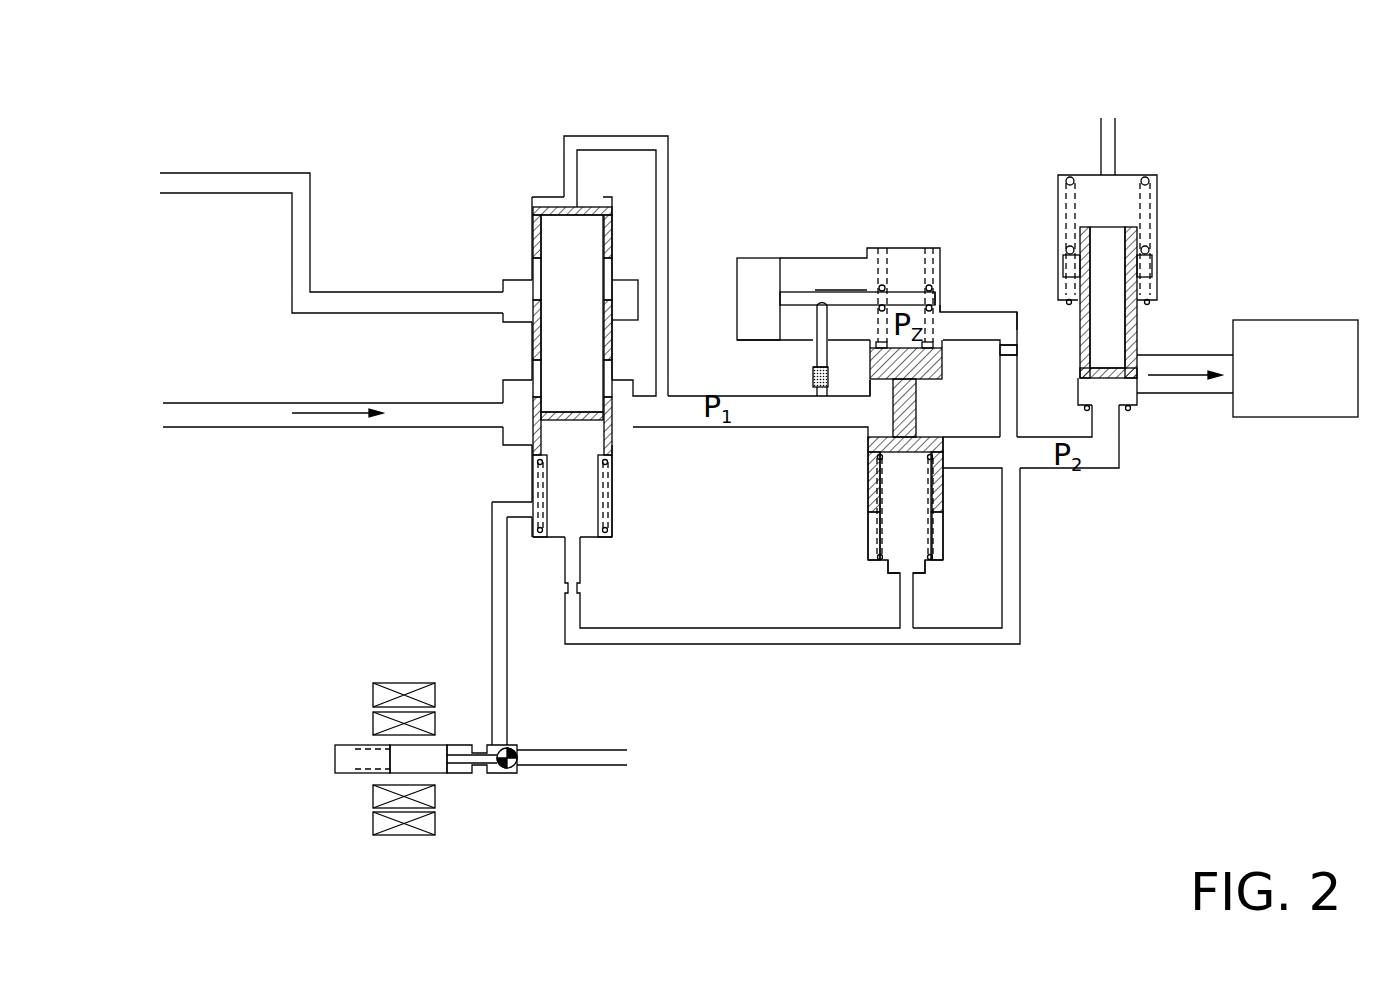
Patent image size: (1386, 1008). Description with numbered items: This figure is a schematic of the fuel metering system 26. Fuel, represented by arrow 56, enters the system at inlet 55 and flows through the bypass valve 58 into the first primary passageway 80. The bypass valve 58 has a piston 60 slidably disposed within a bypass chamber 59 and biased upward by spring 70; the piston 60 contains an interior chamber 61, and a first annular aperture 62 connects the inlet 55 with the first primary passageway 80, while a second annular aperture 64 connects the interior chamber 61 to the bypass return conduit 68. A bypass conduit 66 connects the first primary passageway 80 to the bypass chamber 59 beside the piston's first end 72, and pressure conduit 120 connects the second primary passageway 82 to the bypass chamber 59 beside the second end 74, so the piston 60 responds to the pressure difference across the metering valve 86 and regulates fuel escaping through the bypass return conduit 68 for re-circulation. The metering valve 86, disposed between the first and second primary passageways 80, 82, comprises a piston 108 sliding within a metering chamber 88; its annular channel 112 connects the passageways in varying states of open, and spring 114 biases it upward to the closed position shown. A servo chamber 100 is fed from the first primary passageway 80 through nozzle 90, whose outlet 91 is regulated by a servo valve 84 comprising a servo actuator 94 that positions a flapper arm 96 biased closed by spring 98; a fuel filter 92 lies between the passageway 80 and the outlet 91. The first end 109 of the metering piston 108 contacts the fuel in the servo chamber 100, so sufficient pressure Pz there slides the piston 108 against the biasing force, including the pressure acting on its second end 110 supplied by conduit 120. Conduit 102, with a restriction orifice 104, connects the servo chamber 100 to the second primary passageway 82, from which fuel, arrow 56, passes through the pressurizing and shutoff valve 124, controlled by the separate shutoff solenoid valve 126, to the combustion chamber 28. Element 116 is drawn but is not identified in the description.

The fuel metering system 26 is at (912, 797).
The combustion chamber 28 is at (1322, 425).
The inlet 55 is at (207, 400).
The fuel flow arrow 56 is at (333, 414).
The bypass valve 58 is at (417, 194).
The bypass chamber 59 is at (615, 202).
The piston 60 is at (532, 343).
The interior chamber 61 is at (595, 318).
The first annular aperture 62 is at (532, 375).
The second annular aperture 64 is at (533, 278).
The bypass conduit 66 is at (667, 140).
The bypass return conduit 68 is at (237, 185).
The spring 70 is at (607, 517).
The first end 72 is at (557, 197).
The second end 74 is at (547, 470).
The first primary passageway 80 is at (717, 430).
The second primary passageway 82 is at (1112, 465).
The servo valve 84 is at (758, 208).
The metering valve 86 is at (850, 528).
The metering chamber 88 is at (922, 503).
The nozzle 90 is at (813, 368).
The outlet 91 is at (815, 308).
The fuel filter 92 is at (813, 377).
The servo actuator 94 is at (757, 282).
The flapper arm 96 is at (815, 290).
The spring 98 is at (923, 272).
The servo chamber 100 is at (857, 280).
The conduit 102 is at (1010, 320).
The restriction orifice 104 is at (1017, 350).
The piston 108 is at (868, 407).
The first end 109 is at (943, 365).
The second end 110 is at (947, 442).
The annular channel 112 is at (930, 408).
The spring 114 is at (933, 540).
The spring 116 is at (940, 305).
The pressure conduit 120 is at (727, 645).
The pressurizing and shutoff valve 124 is at (1178, 302).
The shutoff solenoid valve 126 is at (497, 846).